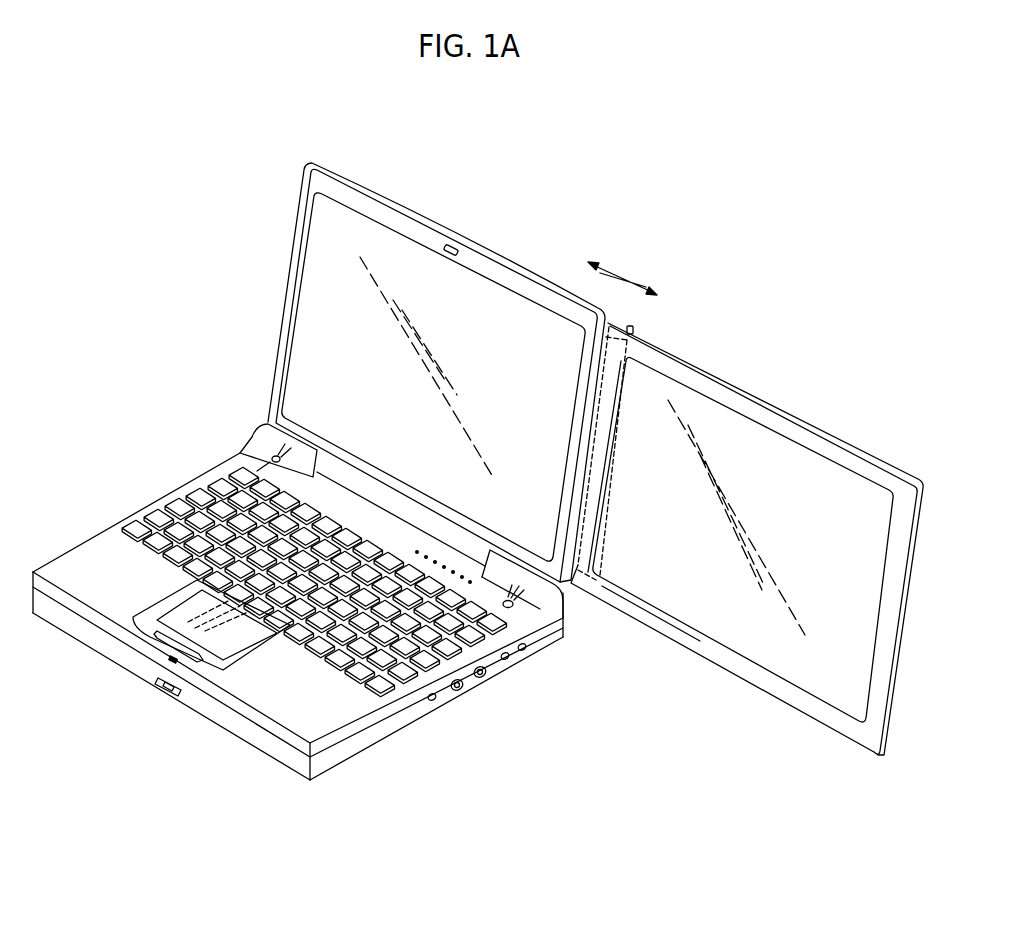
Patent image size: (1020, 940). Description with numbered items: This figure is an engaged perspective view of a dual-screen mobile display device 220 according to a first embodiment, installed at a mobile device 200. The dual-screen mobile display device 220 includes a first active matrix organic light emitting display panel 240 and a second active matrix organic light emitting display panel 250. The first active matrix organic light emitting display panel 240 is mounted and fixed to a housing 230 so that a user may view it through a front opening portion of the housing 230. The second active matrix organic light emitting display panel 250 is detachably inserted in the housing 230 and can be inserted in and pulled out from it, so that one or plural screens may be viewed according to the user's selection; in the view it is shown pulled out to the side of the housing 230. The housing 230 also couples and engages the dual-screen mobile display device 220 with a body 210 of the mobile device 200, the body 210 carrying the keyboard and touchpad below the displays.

The mobile device 200 is at (134, 229).
The body 210 is at (146, 487).
The dual-screen mobile display device 220 is at (256, 272).
The housing 230 is at (350, 181).
The first active matrix organic light emitting display panel 240 is at (490, 305).
The second active matrix organic light emitting display panel 250 is at (725, 425).